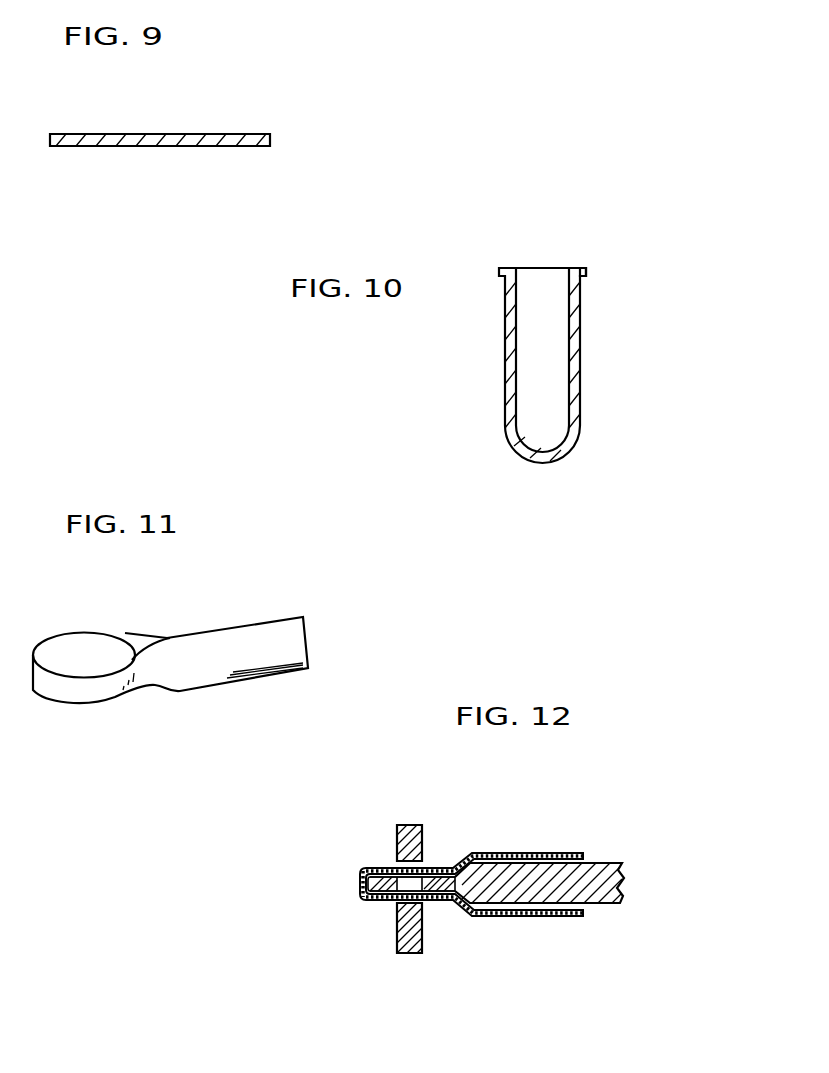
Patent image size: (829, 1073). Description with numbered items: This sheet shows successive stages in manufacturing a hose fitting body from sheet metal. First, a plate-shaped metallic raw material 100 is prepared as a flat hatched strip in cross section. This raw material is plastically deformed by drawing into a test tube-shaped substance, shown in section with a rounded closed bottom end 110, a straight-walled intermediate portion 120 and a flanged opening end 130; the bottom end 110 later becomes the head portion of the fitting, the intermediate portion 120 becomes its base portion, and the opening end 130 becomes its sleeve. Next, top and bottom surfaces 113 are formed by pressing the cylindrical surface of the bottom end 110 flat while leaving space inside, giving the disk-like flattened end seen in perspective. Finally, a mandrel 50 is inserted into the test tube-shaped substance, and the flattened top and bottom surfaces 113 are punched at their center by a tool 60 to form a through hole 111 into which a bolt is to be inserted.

In FIG. 9, the plate-shaped metallic raw material 100 is at (250, 133).
In FIG. 10, the bottom end 110 is at (581, 422).
In FIG. 10, the intermediate portion 120 is at (581, 363).
In FIG. 10, the opening end 130 is at (563, 266).
In FIG. 11, the top and bottom surfaces 113 is at (60, 665).
In FIG. 12, the top and bottom surfaces 113 is at (367, 856).
In FIG. 12, the through hole 111 is at (423, 905).
In FIG. 12, the tool 60 is at (408, 943).
In FIG. 12, the mandrel 50 is at (537, 892).